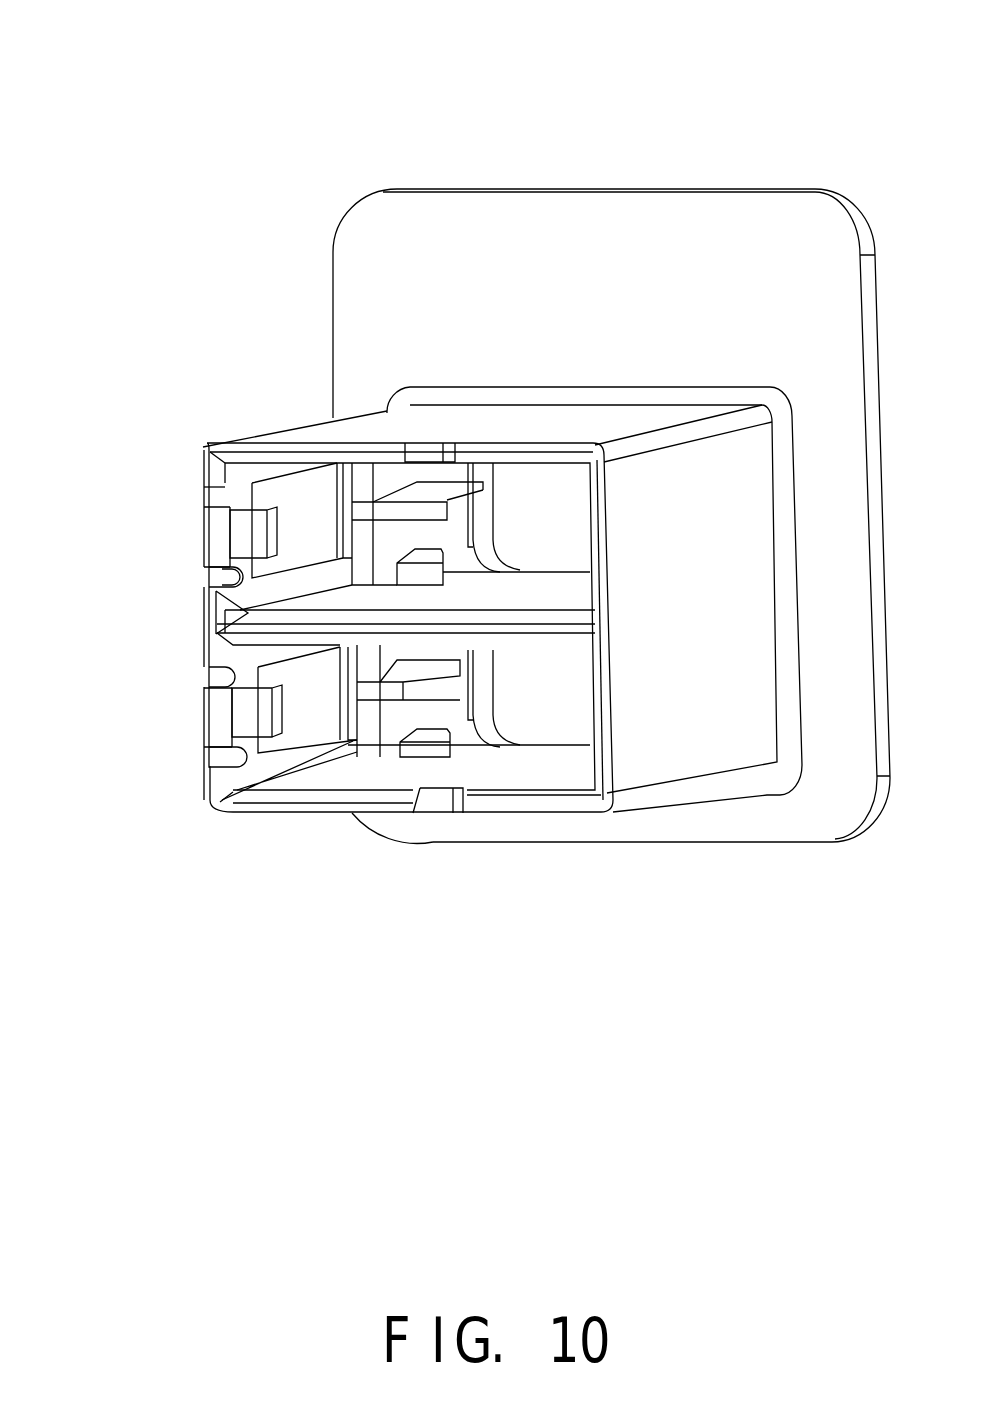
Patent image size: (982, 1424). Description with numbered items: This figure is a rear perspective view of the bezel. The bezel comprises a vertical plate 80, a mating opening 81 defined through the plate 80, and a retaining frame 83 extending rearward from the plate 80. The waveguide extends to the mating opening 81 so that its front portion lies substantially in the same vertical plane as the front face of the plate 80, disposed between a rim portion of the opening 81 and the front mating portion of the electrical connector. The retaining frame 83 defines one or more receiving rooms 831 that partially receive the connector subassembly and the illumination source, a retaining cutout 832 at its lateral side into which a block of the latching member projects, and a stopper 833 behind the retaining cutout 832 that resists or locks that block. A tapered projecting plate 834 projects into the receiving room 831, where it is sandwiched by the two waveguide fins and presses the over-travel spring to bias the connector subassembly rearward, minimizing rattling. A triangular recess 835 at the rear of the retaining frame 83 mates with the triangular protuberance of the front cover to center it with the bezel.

The vertical plate 80 is at (587, 267).
The mating opening 81 is at (537, 500).
The retaining frame 83 is at (600, 537).
The receiving room 831 is at (553, 540).
The retaining cutout 832 is at (305, 504).
The stopper 833 is at (250, 541).
The projecting plate 834 is at (377, 507).
The triangular recess 835 is at (433, 622).